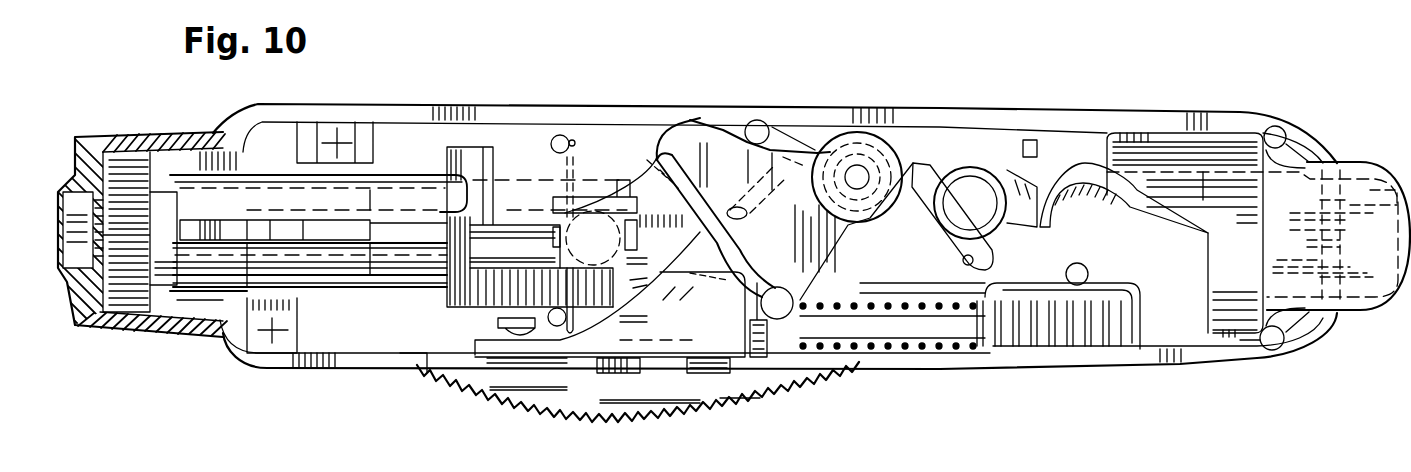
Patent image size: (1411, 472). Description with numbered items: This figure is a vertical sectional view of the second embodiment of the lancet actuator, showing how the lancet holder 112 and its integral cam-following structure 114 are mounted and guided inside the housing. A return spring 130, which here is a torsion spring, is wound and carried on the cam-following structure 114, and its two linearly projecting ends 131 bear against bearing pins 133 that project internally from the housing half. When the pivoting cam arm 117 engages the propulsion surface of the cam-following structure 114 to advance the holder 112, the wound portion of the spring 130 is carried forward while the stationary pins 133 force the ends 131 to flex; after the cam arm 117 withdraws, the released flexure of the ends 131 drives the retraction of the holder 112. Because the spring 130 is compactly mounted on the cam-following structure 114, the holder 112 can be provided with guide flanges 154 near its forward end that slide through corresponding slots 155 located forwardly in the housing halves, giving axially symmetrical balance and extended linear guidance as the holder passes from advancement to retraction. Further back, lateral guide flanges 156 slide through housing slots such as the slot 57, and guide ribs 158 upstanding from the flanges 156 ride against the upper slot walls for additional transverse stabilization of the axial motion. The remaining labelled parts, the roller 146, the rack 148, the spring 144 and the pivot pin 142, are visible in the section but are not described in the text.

The slots 155 is at (180, 217).
The guide flanges 154 is at (230, 217).
The holder 112 is at (392, 200).
The cam-following structure 114 is at (478, 177).
The slot 57 is at (517, 200).
The bearing pins 133 is at (573, 190).
The linearly projecting ends 131 is at (572, 208).
The return spring 130 is at (689, 120).
The lateral guide flanges 156 is at (700, 118).
The cam arm 117 is at (848, 176).
The roller 146 is at (925, 160).
The rack 148 is at (912, 222).
The spring 144 is at (793, 325).
The pivot pin 142 is at (784, 318).
The guide ribs 158 is at (655, 195).